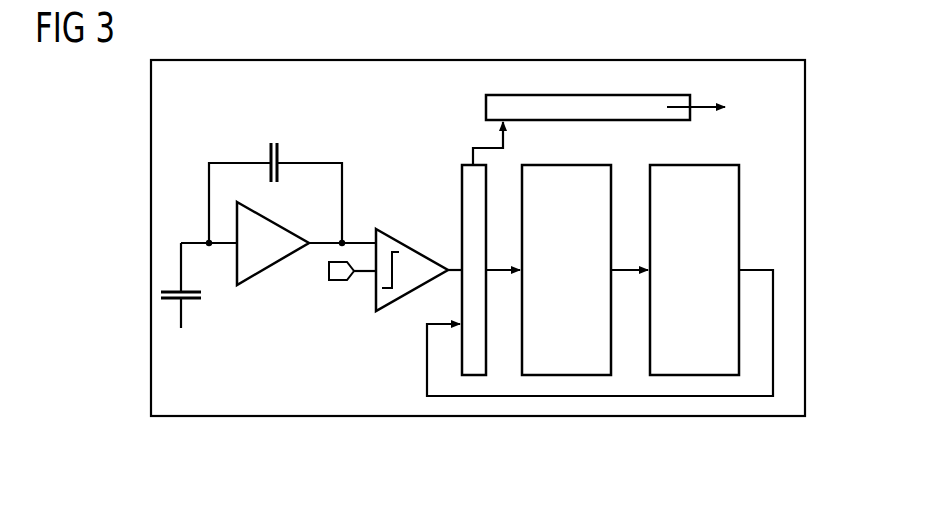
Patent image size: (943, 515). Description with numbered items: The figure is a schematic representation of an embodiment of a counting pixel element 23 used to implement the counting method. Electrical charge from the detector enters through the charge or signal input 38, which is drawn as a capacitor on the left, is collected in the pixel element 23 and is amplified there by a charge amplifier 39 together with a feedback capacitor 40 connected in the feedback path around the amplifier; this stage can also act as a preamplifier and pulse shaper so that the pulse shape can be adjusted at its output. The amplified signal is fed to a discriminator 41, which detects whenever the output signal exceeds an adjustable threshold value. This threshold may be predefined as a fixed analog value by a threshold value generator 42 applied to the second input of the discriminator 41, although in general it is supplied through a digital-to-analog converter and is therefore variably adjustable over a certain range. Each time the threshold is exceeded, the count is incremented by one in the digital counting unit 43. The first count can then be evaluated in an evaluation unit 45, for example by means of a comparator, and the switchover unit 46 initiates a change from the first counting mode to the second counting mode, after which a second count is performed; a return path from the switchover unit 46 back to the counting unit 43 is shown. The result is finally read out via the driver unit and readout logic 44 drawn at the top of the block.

The counting pixel element 23 is at (149, 383).
The charge or signal input 38 is at (181, 322).
The charge amplifier 39 is at (254, 283).
The feedback capacitor Cfb 40 is at (267, 153).
The discriminator 41 is at (410, 298).
The threshold value generator 42 is at (328, 276).
The counting unit 43 is at (462, 195).
The readout logic 44 is at (634, 103).
The evaluation unit 45 is at (572, 375).
The switchover unit 46 is at (716, 375).